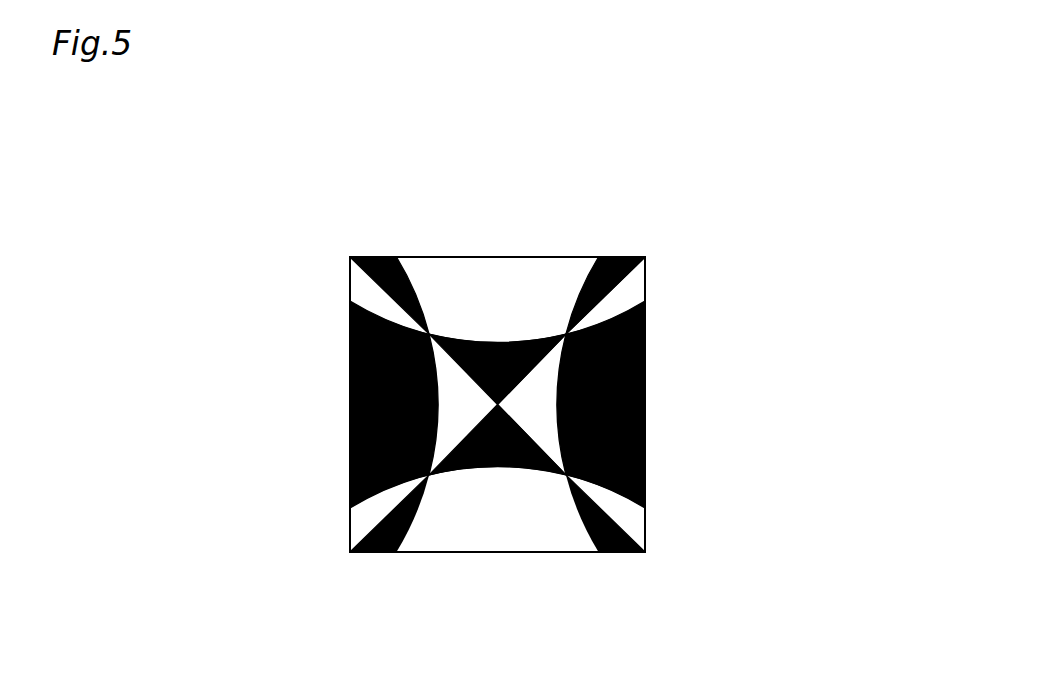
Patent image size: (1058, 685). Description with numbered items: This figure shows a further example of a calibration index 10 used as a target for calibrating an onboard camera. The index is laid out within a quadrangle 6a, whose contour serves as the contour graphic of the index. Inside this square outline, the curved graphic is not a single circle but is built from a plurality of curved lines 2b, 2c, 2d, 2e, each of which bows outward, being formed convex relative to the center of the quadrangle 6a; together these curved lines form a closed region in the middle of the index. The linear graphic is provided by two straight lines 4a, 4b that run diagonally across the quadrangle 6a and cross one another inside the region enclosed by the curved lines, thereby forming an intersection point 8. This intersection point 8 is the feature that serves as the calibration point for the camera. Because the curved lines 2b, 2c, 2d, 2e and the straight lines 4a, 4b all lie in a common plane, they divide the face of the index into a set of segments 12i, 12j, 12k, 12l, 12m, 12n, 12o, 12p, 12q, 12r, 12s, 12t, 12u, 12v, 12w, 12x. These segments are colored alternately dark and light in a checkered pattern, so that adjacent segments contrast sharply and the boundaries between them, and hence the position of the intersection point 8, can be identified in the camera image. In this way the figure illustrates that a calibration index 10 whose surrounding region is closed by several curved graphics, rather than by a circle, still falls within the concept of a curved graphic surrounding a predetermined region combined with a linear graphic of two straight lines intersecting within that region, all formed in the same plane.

The calibration index 10 is at (731, 172).
The curved line 2b is at (427, 297).
The curved line 2c is at (585, 278).
The curved line 2d is at (448, 472).
The curved line 2e is at (438, 438).
The straight line 4a is at (625, 508).
The straight line 4b is at (623, 283).
The quadrangle 6a is at (645, 382).
The intersection point 8 is at (487, 393).
The segment 12i is at (350, 447).
The segment 12j is at (452, 403).
The segment 12k is at (452, 272).
The segment 12l is at (484, 342).
The segment 12m is at (645, 342).
The segment 12n is at (562, 405).
The segment 12o is at (558, 535).
The segment 12p is at (498, 470).
The sub-region 12q of region 12 12q is at (365, 518).
The sub-region 12r of region 12 12r is at (362, 283).
The sub-region 12s of region 12 12s is at (367, 257).
The sub-region 12t of region 12 12t is at (612, 256).
The sub-region 12u of region 12 12u is at (633, 292).
The sub-region 12v of region 12 12v is at (645, 482).
The sub-region 12w of region 12 12w is at (617, 552).
The sub-region 12x of region 12 12x is at (370, 552).